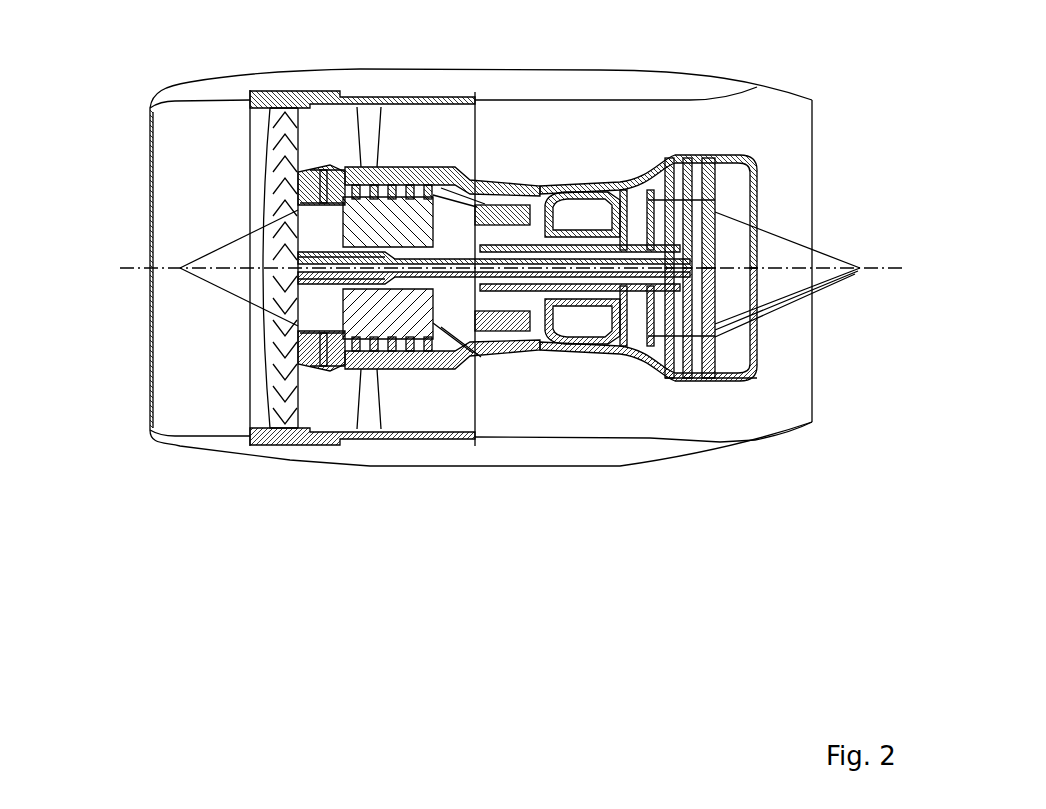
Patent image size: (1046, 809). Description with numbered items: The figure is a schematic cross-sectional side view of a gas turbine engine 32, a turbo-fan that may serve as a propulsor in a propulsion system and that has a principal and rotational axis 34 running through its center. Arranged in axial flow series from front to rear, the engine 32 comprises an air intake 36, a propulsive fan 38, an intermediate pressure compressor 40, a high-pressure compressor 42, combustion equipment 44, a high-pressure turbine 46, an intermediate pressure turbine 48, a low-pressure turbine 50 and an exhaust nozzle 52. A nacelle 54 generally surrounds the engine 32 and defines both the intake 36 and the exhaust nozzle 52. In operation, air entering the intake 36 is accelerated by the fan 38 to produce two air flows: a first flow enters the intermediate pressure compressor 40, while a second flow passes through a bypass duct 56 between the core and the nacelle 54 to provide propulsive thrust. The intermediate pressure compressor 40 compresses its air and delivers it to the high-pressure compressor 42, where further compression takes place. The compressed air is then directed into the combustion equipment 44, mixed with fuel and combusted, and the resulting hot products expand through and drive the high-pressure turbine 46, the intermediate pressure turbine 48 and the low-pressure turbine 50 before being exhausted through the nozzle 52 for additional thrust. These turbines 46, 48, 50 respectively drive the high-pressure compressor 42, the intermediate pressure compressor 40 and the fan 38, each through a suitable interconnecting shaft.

The gas turbine engine 32 is at (124, 138).
The principal and rotational axis 34 is at (140, 268).
The air intake 36 is at (211, 104).
The propulsive fan 38 is at (273, 400).
The intermediate pressure compressor 40 is at (385, 342).
The high-pressure compressor 42 is at (493, 213).
The combustion equipment 44 is at (570, 335).
The high-pressure turbine 46 is at (613, 335).
The intermediate pressure turbine 48 is at (647, 183).
The low-pressure turbine 50 is at (667, 358).
The exhaust nozzle 52 is at (812, 422).
The nacelle 54 is at (613, 70).
The bypass duct 56 is at (446, 153).